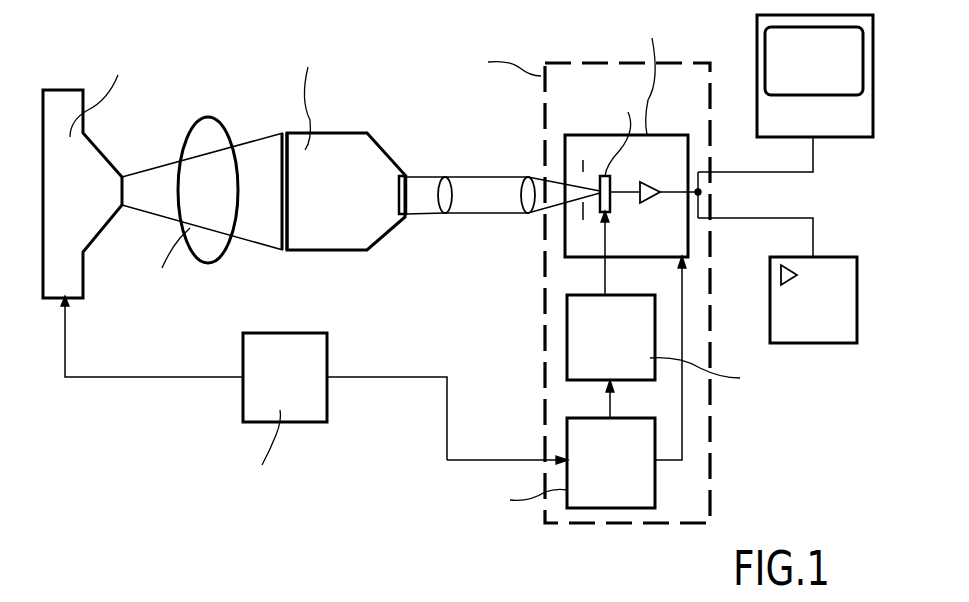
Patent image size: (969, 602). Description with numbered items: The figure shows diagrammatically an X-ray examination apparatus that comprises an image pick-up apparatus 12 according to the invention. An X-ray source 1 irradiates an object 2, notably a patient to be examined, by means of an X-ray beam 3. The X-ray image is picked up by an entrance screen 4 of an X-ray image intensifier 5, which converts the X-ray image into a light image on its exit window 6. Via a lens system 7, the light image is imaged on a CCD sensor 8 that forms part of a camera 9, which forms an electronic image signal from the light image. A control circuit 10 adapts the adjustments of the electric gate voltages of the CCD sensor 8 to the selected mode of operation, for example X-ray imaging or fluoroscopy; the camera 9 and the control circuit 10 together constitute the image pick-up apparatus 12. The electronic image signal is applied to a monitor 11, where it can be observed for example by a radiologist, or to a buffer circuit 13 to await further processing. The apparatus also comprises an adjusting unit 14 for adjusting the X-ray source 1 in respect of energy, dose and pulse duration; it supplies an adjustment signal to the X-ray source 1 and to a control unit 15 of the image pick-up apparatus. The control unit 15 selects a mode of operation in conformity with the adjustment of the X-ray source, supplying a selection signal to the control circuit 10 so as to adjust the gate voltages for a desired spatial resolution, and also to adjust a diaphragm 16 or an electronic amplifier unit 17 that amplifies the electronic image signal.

The X-ray source 1 is at (68, 100).
The object 2 is at (205, 130).
The X-ray beam 3 is at (146, 183).
The entrance screen 4 is at (280, 150).
The X-ray image intensifier 5 is at (340, 140).
The exit window 6 is at (402, 177).
The lens system 7 is at (442, 160).
The CCD sensor 8 is at (608, 178).
The camera 9 is at (668, 140).
The control circuit 10 is at (567, 334).
The monitor 11 is at (757, 30).
The image pick-up apparatus 12 is at (597, 77).
The buffer circuit 13 is at (843, 270).
The adjusting unit 14 is at (313, 350).
The control unit 15 is at (645, 488).
The diaphragm 16 is at (585, 172).
The electronic amplifier unit 17 is at (650, 183).